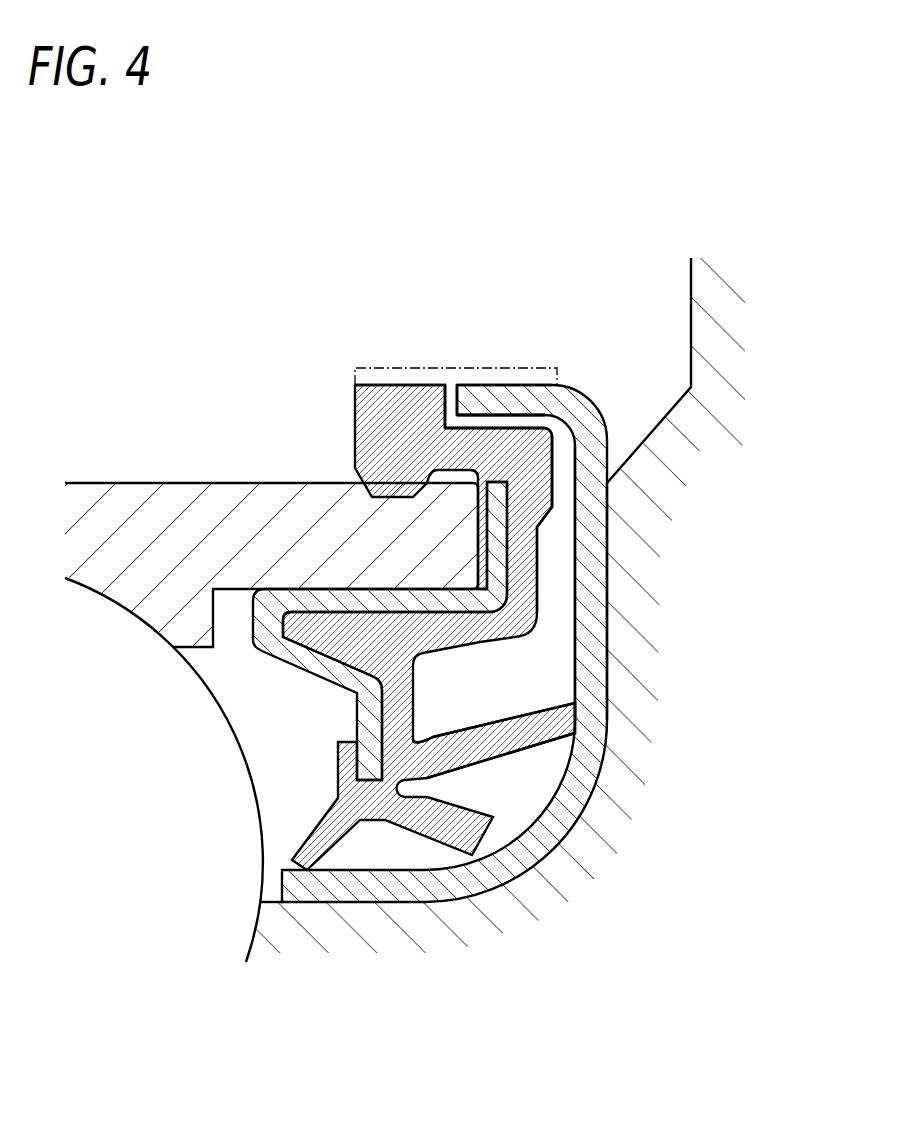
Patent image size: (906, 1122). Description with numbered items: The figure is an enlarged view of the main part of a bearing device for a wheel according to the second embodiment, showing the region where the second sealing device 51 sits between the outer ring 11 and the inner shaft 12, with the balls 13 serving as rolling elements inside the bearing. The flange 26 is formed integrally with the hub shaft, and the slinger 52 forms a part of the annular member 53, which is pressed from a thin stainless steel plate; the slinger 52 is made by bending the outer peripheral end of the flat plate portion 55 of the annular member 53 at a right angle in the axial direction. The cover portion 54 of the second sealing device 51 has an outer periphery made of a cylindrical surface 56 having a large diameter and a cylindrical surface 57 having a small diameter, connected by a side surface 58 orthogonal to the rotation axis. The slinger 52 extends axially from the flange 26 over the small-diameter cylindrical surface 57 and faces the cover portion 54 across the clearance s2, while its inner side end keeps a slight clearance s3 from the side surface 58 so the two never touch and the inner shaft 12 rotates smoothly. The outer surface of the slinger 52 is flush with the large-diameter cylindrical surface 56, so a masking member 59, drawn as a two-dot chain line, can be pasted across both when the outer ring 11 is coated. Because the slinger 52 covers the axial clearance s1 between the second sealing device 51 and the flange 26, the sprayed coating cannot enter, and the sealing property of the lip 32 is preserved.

The outer ring 11 is at (183, 490).
The inner shaft 12 is at (525, 932).
The balls 13 is at (230, 927).
The flange 26 is at (690, 298).
The lips 32 is at (525, 747).
The second sealing device 51 is at (444, 553).
The slinger 52 is at (527, 392).
The annular member 53 is at (630, 710).
The cover portion 54 is at (355, 435).
The flat plate portion 55 is at (605, 615).
The cylindrical surface having a large diameter 56 is at (407, 386).
The cylindrical surface having a small diameter 57 is at (503, 420).
The side surface 58 is at (478, 395).
The masking member 59 is at (388, 366).
The axial clearance s1 is at (556, 548).
The clearance s2 is at (537, 422).
The clearance s3 is at (452, 386).